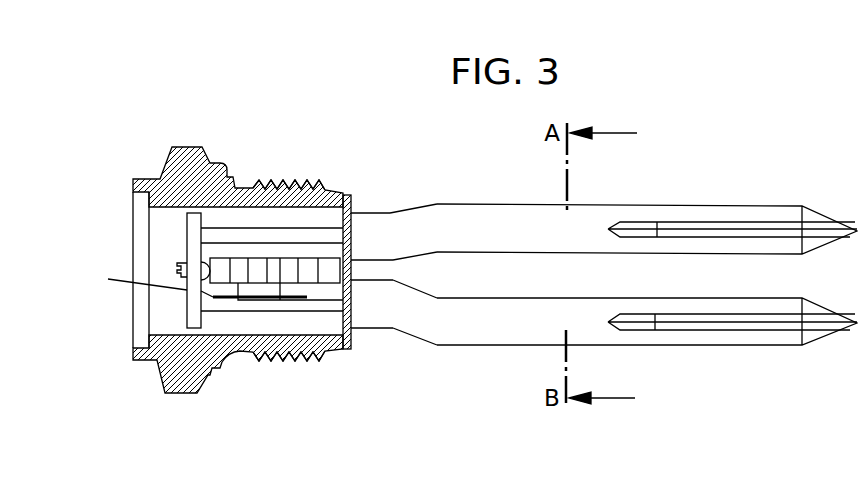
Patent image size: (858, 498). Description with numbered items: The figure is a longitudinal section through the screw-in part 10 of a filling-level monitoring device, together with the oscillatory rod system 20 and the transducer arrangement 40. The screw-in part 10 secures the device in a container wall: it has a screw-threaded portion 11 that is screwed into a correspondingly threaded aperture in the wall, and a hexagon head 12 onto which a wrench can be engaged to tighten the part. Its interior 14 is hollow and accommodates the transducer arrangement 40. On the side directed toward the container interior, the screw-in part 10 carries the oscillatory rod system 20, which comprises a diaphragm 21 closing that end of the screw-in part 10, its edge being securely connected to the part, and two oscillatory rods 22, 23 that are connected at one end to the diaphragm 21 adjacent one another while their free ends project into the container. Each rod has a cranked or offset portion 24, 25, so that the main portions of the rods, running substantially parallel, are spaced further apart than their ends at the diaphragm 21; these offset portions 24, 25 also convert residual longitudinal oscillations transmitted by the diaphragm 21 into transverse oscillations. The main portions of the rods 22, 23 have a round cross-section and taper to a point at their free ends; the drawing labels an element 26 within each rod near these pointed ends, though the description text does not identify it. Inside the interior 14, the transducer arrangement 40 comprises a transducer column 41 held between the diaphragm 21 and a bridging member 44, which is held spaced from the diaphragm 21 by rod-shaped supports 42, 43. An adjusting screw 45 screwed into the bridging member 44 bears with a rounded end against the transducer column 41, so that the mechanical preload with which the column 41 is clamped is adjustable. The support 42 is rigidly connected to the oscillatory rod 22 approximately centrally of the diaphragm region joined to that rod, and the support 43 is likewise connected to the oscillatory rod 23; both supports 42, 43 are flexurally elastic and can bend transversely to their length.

The screw-in part 10 is at (254, 249).
The screw-threaded portion 11 is at (291, 186).
The hexagon head 12 is at (190, 149).
The interior 14 is at (323, 327).
The oscillatory rod system 20 is at (604, 252).
The diaphragm 21 is at (353, 267).
The oscillatory rod 22 is at (507, 216).
The oscillatory rod 23 is at (509, 325).
The cranked or offset portion 24 is at (405, 222).
The cranked or offset portion 25 is at (414, 323).
The needle electrode 26 is at (730, 225).
The transducer arrangement 40 is at (204, 270).
The transducer column 41 is at (301, 272).
The rod-shaped support 42 is at (243, 233).
The rod-shaped support 43 is at (252, 307).
The bridging member 44 is at (189, 230).
The adjusting screw 45 is at (177, 270).